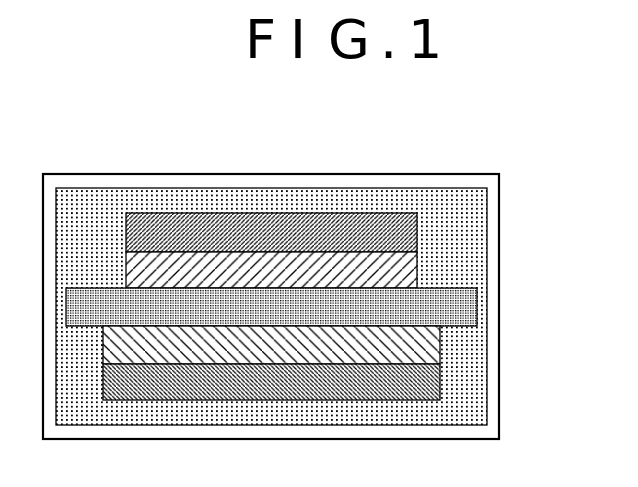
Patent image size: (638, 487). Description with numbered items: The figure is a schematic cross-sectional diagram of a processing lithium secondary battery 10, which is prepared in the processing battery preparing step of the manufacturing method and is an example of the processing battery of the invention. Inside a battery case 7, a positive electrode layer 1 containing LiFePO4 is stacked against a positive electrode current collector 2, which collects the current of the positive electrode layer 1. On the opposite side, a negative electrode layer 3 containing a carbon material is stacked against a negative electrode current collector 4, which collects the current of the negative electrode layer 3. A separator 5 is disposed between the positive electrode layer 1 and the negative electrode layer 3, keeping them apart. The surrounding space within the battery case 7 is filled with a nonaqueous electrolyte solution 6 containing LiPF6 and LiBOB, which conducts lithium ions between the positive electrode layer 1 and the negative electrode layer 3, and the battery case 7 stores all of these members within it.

The processing lithium secondary battery 10 is at (468, 153).
The positive electrode layer 1 is at (405, 268).
The positive electrode current collector 2 is at (417, 231).
The negative electrode layer 3 is at (405, 348).
The negative electrode current collector 4 is at (418, 383).
The separator 5 is at (452, 303).
The nonaqueous electrolyte solution 6 is at (450, 410).
The battery case 7 is at (488, 431).